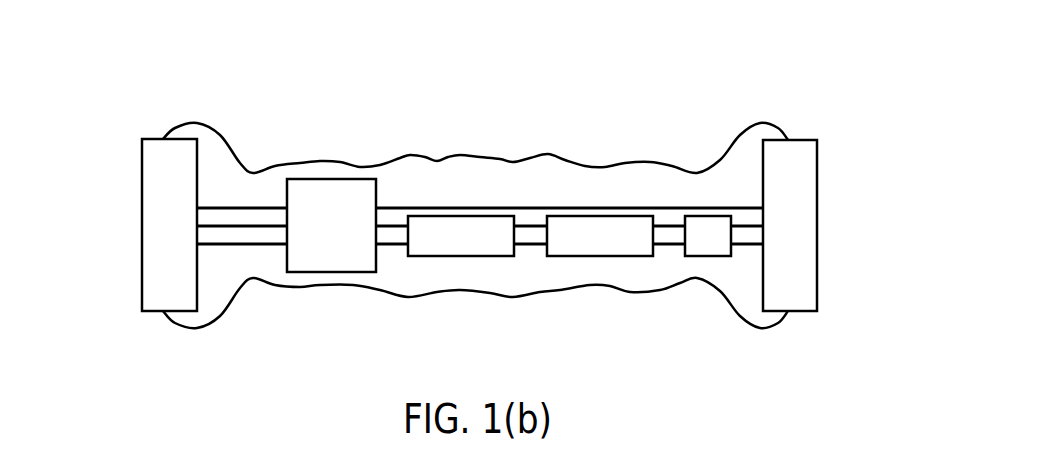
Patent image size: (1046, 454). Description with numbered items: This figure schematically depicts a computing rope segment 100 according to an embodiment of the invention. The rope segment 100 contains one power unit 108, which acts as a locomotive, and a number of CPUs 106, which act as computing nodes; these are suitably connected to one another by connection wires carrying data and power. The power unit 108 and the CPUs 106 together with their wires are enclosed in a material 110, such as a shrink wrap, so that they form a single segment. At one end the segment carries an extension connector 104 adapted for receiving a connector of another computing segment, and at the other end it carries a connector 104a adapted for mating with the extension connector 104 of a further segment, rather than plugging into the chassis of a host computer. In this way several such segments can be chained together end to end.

The rope segment 100 is at (727, 95).
The extension connector 104 is at (142, 226).
The connector 104a is at (817, 225).
The CPU 106 is at (463, 230).
The power unit 108 is at (336, 195).
The material 110 is at (349, 288).